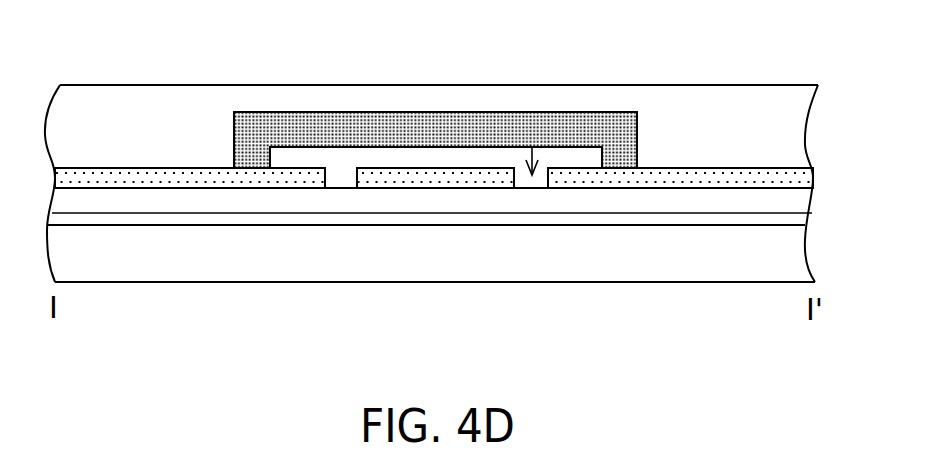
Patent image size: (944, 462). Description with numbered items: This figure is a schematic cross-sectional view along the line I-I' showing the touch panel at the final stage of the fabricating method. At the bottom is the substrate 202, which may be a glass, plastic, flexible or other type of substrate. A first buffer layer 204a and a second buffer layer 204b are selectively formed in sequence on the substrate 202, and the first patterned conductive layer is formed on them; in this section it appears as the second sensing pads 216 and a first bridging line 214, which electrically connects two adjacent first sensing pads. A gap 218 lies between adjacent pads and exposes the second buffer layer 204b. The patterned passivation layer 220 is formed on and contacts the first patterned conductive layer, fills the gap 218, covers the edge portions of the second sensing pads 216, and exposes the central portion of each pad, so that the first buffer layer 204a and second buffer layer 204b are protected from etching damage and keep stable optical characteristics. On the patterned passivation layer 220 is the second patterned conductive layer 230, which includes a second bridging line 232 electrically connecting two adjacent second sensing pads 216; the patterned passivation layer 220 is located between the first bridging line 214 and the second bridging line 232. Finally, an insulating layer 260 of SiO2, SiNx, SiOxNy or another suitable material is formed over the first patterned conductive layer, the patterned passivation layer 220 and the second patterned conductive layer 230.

The substrate 202 is at (776, 267).
The first buffer layer 204a is at (512, 222).
The second buffer layer 204b is at (585, 207).
The first bridging line 214 is at (405, 178).
The second sensing pad 216 is at (168, 177).
The gap 218 is at (531, 150).
The patterned passivation layer 220 is at (573, 157).
The second patterned conductive layer 230 is at (470, 102).
The second bridging line 232 is at (607, 142).
The insulating layer 260 is at (785, 100).